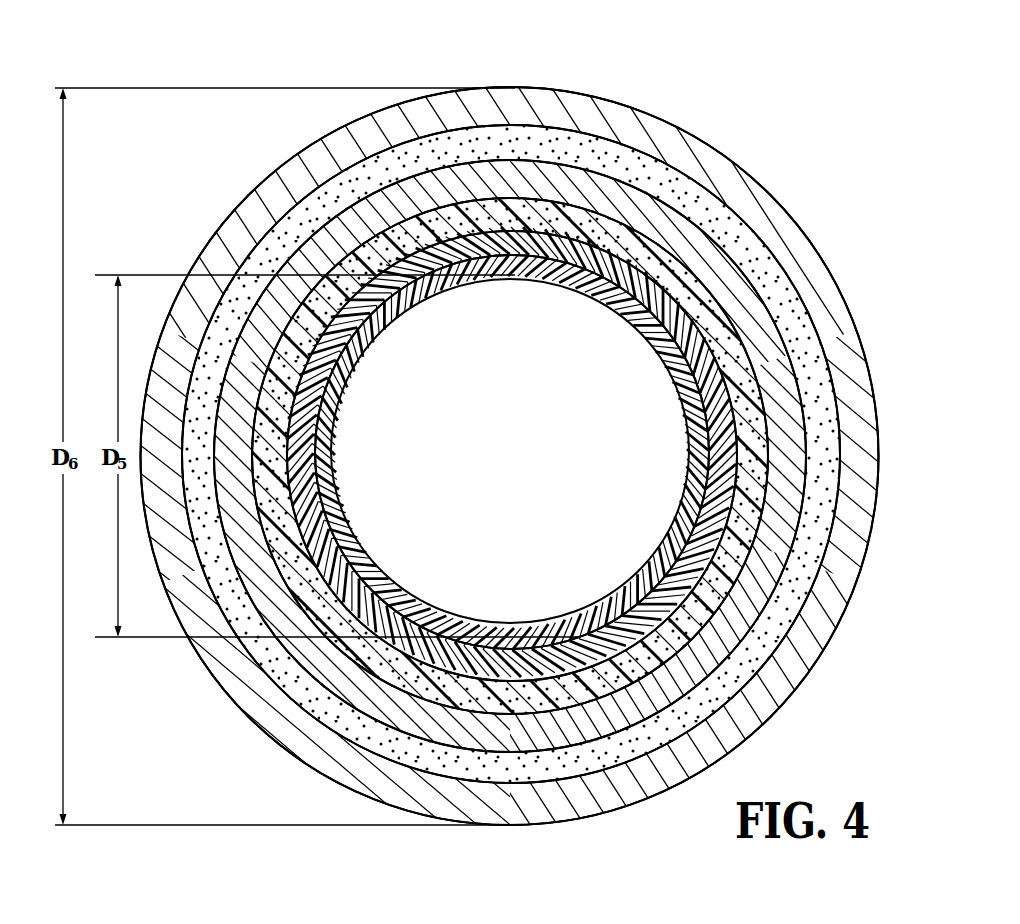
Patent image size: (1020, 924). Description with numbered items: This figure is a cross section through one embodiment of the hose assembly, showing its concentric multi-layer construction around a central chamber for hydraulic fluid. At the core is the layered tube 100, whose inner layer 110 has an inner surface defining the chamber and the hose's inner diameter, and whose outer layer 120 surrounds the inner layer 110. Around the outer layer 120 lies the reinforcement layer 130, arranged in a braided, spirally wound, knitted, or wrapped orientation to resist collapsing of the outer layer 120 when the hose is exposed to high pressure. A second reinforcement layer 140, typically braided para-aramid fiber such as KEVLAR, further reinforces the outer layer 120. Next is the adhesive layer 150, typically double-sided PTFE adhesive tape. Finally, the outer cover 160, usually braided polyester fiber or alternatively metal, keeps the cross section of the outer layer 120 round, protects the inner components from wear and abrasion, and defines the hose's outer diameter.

The layered tube 100 is at (683, 96).
The inner layer 110 is at (330, 398).
The outer layer 120 is at (662, 303).
The reinforcement layer 130 is at (728, 333).
The second reinforcement layer 140 is at (783, 398).
The adhesive layer 150 is at (825, 413).
The outer cover 160 is at (862, 447).